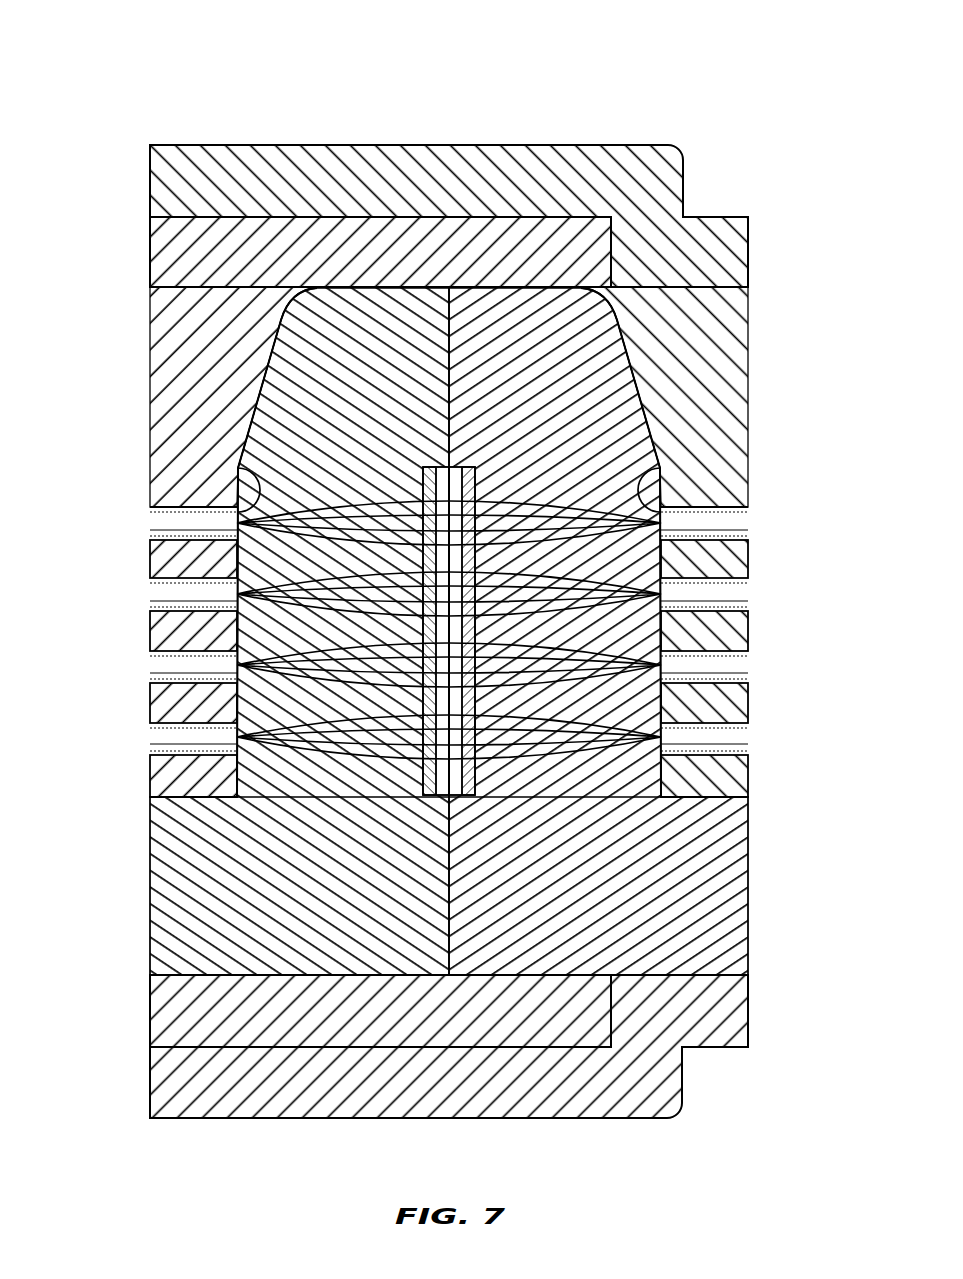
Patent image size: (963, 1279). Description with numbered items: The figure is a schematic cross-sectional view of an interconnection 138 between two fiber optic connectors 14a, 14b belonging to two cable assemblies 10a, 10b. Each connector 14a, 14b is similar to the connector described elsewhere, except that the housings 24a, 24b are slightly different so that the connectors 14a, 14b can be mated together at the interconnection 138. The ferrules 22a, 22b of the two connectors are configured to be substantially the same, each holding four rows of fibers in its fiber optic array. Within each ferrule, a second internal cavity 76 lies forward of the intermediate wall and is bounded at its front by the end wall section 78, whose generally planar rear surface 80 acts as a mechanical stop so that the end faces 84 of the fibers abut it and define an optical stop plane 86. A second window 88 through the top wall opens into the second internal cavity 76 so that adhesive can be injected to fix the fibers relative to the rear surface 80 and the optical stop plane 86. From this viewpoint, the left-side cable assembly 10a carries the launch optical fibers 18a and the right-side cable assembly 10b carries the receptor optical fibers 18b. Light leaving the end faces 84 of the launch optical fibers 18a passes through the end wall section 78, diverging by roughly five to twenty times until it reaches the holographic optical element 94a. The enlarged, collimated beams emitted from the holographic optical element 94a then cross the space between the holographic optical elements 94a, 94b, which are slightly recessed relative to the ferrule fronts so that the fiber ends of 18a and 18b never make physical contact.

The fiber optic cable assembly 10a is at (95, 43).
The fiber optic cable assembly 10b is at (795, 43).
The fiber optic connector 14a is at (155, 116).
The fiber optic connector 14b is at (753, 116).
The ferrule 22a is at (216, 280).
The ferrule 22b is at (686, 280).
The housing 24a is at (384, 210).
The housing 24b is at (533, 142).
The second internal cavity 76 is at (286, 322).
The end wall section 78 is at (327, 373).
The rear surface 80 is at (237, 630).
The end faces 84 is at (238, 468).
The optical stop plane 86 is at (237, 770).
The second window 88 is at (248, 287).
The holographic optical element 94a is at (423, 467).
The holographic optical element 94b is at (475, 467).
The interconnection 138 is at (450, 280).
The launch optical fibers 18a is at (163, 507).
The receptor optical fibers 18b is at (735, 507).